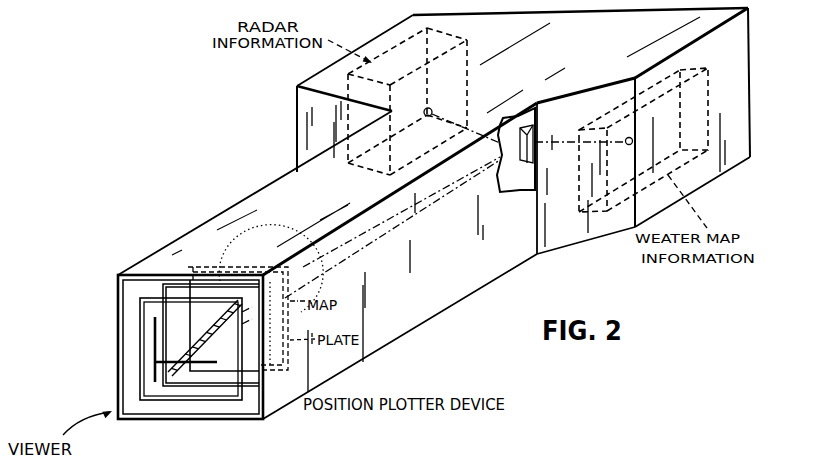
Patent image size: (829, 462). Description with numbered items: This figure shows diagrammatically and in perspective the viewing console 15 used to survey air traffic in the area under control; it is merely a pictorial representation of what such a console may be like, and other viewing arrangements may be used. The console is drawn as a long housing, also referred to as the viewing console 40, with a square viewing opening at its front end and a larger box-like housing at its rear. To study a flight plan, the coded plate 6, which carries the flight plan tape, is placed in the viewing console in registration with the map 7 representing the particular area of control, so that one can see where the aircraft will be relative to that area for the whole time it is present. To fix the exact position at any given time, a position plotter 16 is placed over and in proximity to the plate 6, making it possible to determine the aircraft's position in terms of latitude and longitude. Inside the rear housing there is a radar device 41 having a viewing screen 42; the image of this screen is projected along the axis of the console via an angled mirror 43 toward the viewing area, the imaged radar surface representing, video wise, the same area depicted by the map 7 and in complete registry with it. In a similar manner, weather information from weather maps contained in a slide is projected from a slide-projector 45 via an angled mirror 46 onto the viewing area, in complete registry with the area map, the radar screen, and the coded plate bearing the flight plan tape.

The viewing console 40 is at (193, 230).
The viewing console 15 is at (565, 245).
The radar device 41 is at (460, 33).
The viewing screen 42 is at (348, 170).
The angled mirror 43 is at (528, 142).
The slide-projector 45 is at (708, 131).
The angled mirror 46 is at (520, 190).
The position plotter 16 is at (199, 401).
The coded plate 6 is at (245, 383).
The map 7 is at (288, 327).